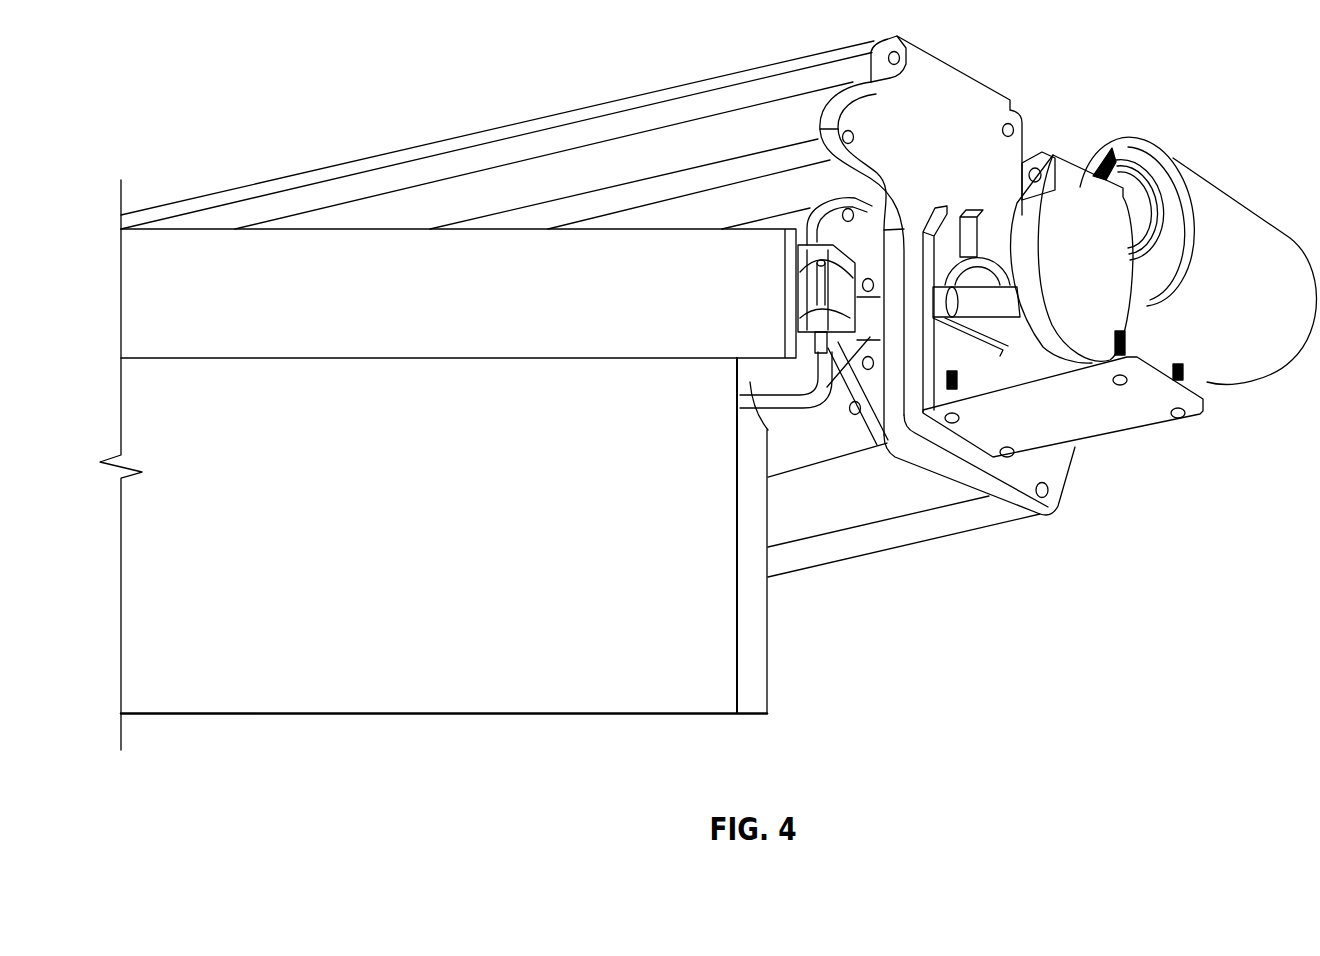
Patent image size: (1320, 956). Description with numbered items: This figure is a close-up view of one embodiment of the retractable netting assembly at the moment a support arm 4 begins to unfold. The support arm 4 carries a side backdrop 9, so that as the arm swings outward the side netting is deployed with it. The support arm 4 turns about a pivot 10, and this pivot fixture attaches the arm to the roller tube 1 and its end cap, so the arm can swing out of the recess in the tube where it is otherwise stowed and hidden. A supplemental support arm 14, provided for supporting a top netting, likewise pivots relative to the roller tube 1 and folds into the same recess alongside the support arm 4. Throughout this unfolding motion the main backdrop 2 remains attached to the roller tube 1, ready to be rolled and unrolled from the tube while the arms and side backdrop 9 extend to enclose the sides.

The roller tube 1 is at (800, 398).
The backdrop 2 is at (750, 585).
The support arm 4 is at (1068, 321).
The side backdrop 9 is at (703, 630).
The pivot fixture 10 is at (905, 430).
The supplemental support arm 14 is at (850, 414).